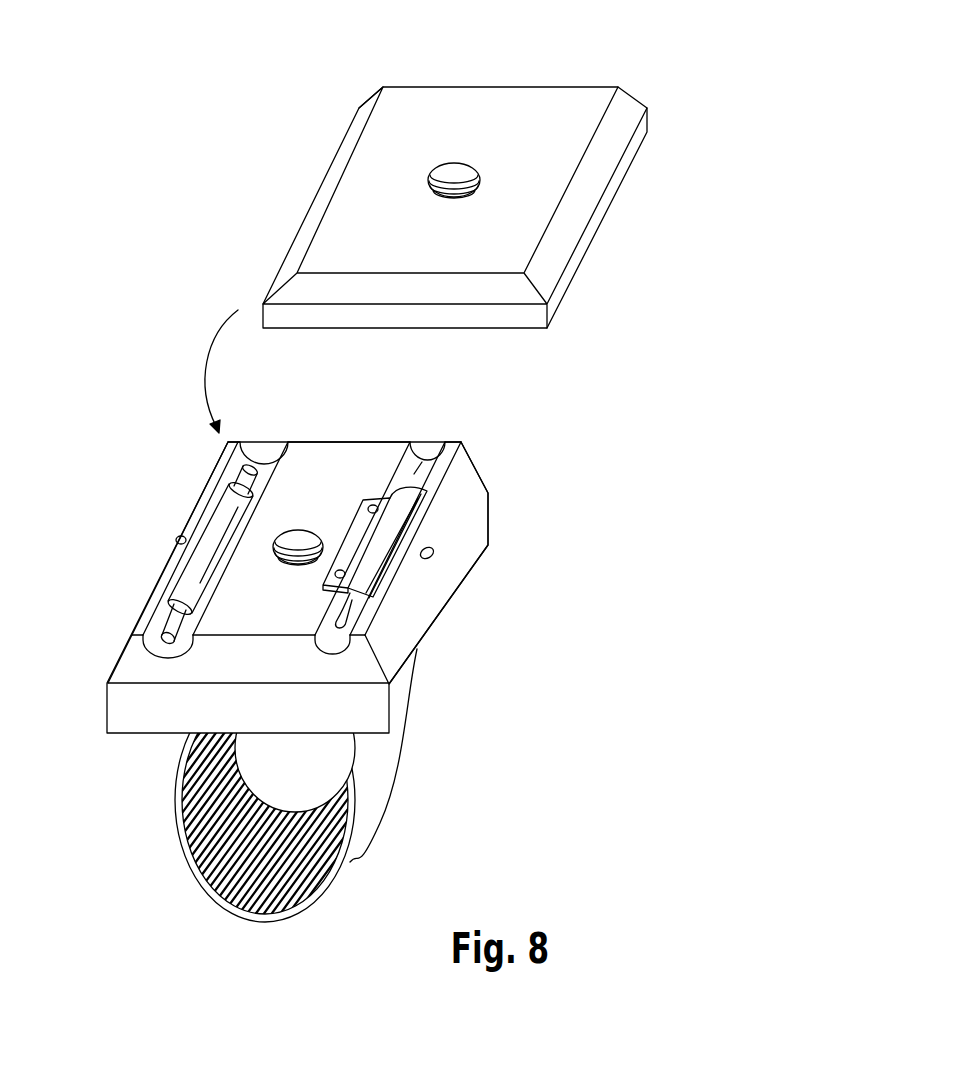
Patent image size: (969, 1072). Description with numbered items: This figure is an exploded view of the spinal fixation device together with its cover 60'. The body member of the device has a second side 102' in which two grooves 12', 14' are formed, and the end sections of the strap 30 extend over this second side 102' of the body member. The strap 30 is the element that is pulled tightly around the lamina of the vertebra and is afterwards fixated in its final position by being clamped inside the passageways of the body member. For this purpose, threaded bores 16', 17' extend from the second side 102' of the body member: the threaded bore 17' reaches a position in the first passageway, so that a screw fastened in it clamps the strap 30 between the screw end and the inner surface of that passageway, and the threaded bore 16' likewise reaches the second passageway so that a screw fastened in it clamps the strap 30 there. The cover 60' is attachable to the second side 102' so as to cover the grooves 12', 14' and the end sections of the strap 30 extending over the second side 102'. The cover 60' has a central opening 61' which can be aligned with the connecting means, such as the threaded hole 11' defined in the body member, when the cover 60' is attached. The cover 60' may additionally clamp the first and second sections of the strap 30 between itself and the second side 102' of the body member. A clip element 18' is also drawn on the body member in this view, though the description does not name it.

The cover 60' is at (476, 171).
The central opening 61' is at (454, 106).
The threaded hole 11' is at (301, 474).
The spring clip 18' is at (375, 506).
The threaded bore 17' is at (136, 529).
The second side 102' is at (146, 554).
The groove 12' is at (112, 672).
The groove 14' is at (401, 672).
The threaded bore 16' is at (464, 599).
The strap 30 is at (370, 785).